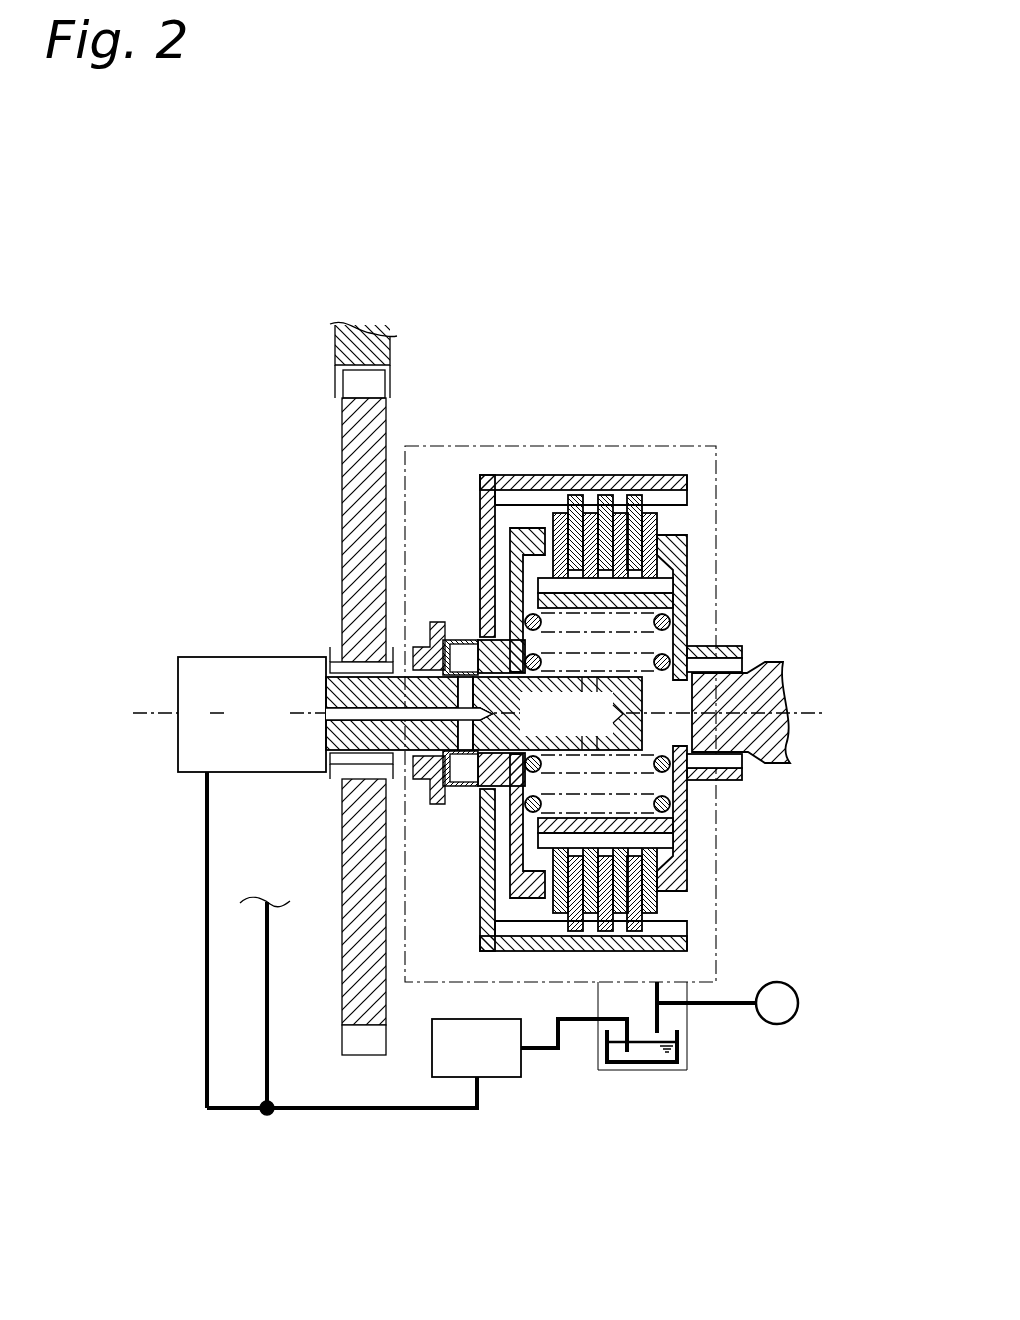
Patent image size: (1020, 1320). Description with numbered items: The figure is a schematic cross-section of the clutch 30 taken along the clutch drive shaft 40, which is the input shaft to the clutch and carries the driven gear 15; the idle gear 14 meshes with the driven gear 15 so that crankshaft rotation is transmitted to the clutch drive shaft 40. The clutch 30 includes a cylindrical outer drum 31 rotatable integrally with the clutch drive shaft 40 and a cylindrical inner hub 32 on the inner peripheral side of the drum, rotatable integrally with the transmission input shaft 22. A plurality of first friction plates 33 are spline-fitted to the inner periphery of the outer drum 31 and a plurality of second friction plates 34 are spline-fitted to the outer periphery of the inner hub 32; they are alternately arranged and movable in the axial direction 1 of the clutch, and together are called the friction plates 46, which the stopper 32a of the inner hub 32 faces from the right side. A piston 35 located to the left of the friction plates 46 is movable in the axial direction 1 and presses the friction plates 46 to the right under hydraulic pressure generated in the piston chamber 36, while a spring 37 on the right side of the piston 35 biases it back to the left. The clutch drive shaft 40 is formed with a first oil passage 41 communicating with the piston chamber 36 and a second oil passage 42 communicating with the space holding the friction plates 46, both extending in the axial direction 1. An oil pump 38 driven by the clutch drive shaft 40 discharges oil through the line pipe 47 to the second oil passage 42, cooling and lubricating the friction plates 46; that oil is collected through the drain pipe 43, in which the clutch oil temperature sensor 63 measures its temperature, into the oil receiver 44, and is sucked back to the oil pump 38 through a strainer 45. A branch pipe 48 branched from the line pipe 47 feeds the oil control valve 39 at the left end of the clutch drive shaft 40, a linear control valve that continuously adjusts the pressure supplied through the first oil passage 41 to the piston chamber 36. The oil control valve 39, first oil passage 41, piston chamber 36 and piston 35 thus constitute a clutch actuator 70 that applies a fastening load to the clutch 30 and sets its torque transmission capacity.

The axial direction 1 is at (803, 713).
The idle gear 14 is at (333, 348).
The driven gear 15 is at (337, 975).
The transmission input shaft 22 is at (778, 763).
The clutch 30 is at (623, 432).
The outer drum 31 is at (537, 478).
The inner hub 32 is at (687, 590).
The stopper 32a is at (688, 550).
The first friction plates 33 is at (642, 503).
The second friction plates 34 is at (658, 525).
The piston 35 is at (510, 540).
The piston chamber 36 is at (463, 654).
The spring 37 is at (671, 622).
The oil pump 38 is at (500, 1077).
The oil control valve 39 is at (250, 656).
The clutch drive shaft 40 is at (333, 693).
The first oil passage 41 is at (340, 716).
The second oil passage 42 is at (606, 733).
The drain pipe 43 is at (660, 1020).
The oil receiver 44 is at (638, 1062).
The strainer 45 is at (540, 1050).
The friction plates 46 is at (713, 398).
The line pipe 47 is at (352, 1110).
The branch pipe 48 is at (207, 1015).
The clutch oil temperature sensor 63 is at (787, 973).
The clutch actuator 70 is at (272, 600).